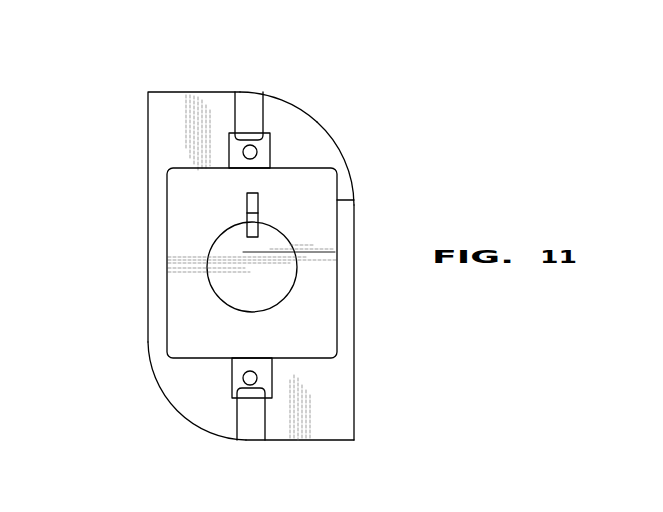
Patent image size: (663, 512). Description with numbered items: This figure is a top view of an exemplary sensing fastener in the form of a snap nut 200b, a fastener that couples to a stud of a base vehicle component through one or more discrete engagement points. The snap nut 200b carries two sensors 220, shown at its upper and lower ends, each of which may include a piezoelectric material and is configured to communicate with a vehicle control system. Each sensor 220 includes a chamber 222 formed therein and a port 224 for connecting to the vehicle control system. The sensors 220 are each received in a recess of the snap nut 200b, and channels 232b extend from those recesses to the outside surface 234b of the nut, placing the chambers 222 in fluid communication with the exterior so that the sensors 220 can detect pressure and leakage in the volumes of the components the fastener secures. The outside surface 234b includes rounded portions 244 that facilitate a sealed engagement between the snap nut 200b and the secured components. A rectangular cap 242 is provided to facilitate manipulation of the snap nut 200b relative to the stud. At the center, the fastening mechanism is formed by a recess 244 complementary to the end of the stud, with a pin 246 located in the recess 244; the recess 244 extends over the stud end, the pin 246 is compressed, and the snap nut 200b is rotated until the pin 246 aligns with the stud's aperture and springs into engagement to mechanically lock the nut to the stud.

The snap nut 200b is at (147, 88).
The sensors 220 is at (271, 139).
The chamber 222 is at (253, 140).
The port 224 is at (243, 151).
The channels 232b is at (243, 88).
The outside surface 234b is at (345, 152).
The rectangular cap 242 is at (356, 200).
The recess 244 is at (290, 100).
The pin 246 is at (240, 230).